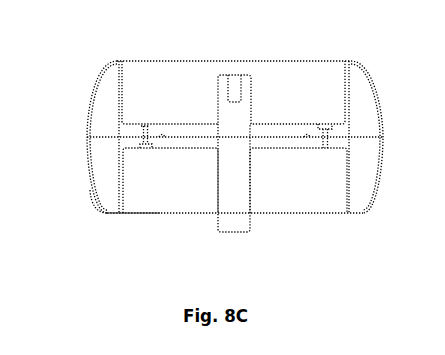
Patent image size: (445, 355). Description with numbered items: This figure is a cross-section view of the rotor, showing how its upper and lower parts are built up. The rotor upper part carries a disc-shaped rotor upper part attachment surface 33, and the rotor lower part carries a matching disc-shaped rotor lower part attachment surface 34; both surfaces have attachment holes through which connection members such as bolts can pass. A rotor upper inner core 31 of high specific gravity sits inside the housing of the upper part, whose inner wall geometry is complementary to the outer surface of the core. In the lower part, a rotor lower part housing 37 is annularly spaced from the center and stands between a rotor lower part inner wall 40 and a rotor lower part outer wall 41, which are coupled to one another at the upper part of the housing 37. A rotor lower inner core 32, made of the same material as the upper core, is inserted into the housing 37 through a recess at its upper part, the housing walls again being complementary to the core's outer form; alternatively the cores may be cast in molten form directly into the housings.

The rotor upper inner core 31 is at (107, 93).
The rotor lower inner core 32 is at (102, 173).
The rotor upper part attachment surface 33 is at (263, 128).
The rotor lower part attachment surface 34 is at (278, 143).
The rotor lower part housing 37 is at (97, 195).
The rotor lower part inner wall 40 is at (351, 183).
The rotor lower part outer wall 41 is at (379, 163).